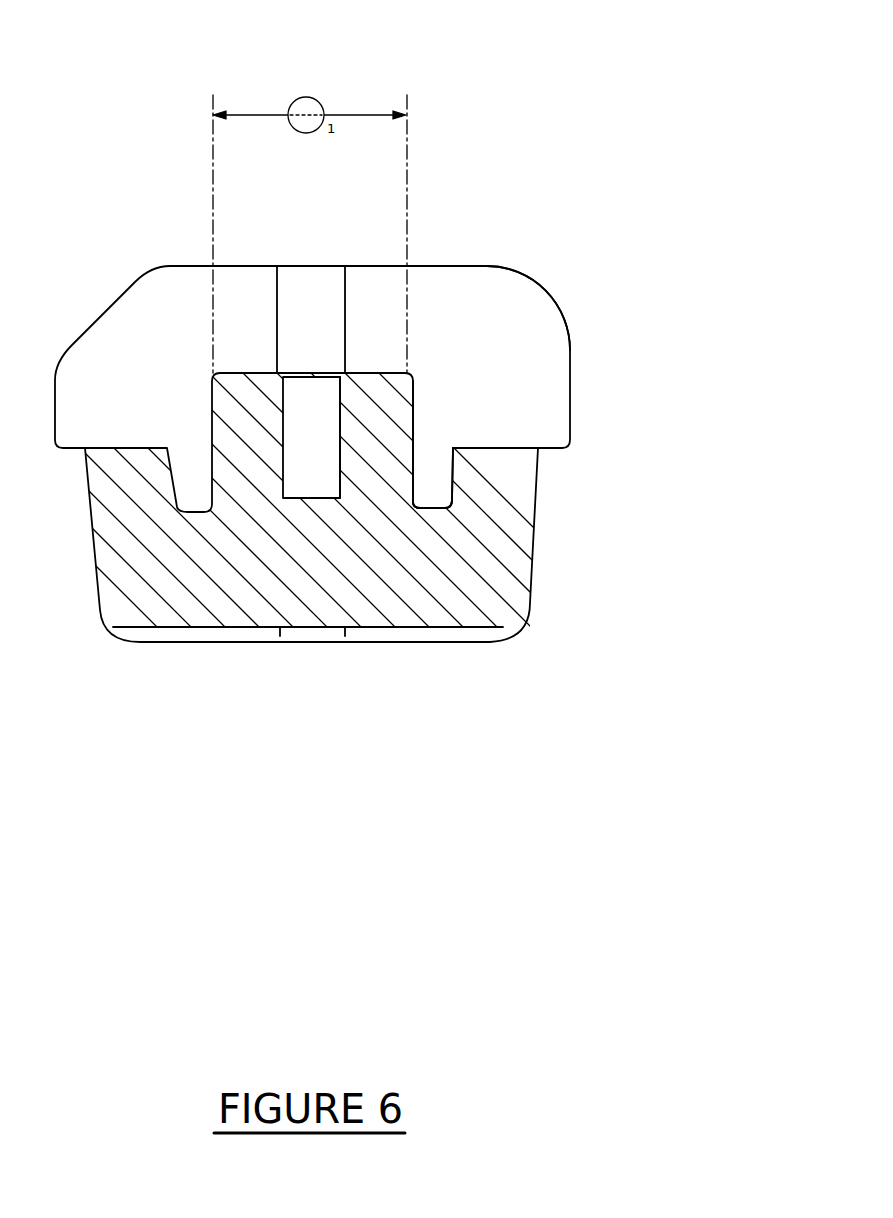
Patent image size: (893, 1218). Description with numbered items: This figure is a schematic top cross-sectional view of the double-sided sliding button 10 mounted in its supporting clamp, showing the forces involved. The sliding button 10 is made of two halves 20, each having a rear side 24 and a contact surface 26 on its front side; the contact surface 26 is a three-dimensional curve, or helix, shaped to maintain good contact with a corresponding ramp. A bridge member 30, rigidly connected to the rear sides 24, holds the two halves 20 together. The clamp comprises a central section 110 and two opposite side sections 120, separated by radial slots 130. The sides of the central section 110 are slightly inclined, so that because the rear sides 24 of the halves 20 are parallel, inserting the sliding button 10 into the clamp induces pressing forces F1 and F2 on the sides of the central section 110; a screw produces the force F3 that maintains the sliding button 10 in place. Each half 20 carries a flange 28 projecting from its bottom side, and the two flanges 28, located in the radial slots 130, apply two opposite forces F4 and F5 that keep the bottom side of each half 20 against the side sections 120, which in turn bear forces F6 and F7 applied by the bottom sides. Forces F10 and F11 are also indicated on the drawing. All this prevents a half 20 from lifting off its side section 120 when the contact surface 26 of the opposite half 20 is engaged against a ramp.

The double-sided sliding button 10 is at (653, 70).
The sliding button half 20 is at (551, 406).
The rear side 24 is at (413, 440).
The contact surface 26 is at (580, 312).
The flange 28 is at (429, 481).
The bridge member 30 is at (386, 290).
The central section 110 is at (353, 403).
The side section 120 is at (526, 447).
The radial slot 130 is at (435, 527).
The pressing force F1 is at (195, 413).
The pressing force F2 is at (426, 413).
The retaining force F3 is at (305, 252).
The flange force F4 is at (191, 464).
The flange force F5 is at (432, 465).
The bottom side force F6 is at (117, 434).
The bottom side force F7 is at (513, 434).
The force F10 is at (235, 320).
The force F11 is at (383, 320).